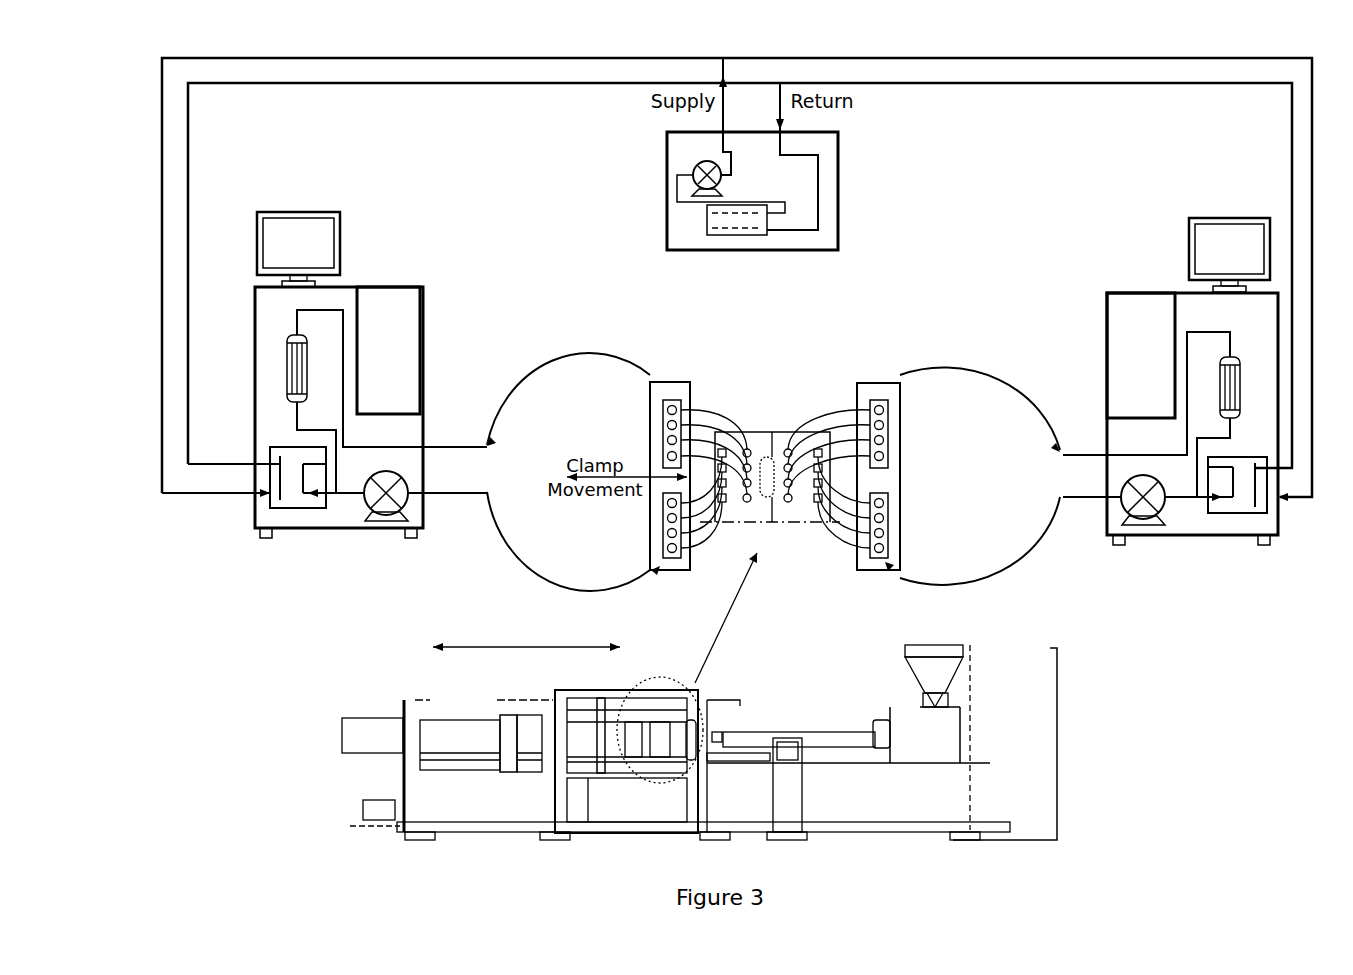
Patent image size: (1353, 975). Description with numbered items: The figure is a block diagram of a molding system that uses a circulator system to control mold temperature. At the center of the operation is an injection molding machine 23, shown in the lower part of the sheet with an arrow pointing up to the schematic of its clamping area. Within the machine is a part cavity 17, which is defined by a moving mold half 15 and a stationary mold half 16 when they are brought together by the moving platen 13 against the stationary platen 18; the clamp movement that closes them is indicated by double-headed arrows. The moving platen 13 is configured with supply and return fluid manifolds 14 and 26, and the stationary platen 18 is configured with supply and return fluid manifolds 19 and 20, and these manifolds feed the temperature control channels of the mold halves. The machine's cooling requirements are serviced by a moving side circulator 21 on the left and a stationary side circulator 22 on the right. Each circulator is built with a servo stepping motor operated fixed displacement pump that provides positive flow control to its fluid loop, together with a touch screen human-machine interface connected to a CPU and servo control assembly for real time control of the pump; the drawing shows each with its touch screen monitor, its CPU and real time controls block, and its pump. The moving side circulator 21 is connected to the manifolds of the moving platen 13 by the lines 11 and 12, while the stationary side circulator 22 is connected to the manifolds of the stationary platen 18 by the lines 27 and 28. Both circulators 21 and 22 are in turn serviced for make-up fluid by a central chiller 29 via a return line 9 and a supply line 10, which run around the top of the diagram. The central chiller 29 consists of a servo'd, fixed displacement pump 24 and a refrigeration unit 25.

The return line 9 is at (882, 83).
The supply line 10 is at (723, 58).
The supply line to first mold half 11 is at (462, 447).
The return line from first mold half 12 is at (463, 493).
The moving platen 13 is at (672, 382).
The fluid manifold 14 is at (683, 572).
The moving mold half 15 is at (757, 432).
The stationary mold half 16 is at (790, 432).
The part cavity 17 is at (757, 522).
The stationary platen 18 is at (887, 383).
The fluid manifold 19 is at (885, 570).
The fluid manifold 20 is at (888, 408).
The moving side circulator 21 is at (255, 312).
The stationary side circulator 22 is at (1107, 318).
The injection molding machine 23 is at (415, 700).
The fixed displacement pump 24 is at (706, 212).
The refrigeration unit 25 is at (697, 167).
The fluid manifold 26 is at (663, 412).
The return line from second mold half 27 is at (1078, 497).
The supply line to second mold half 28 is at (1082, 455).
The central chiller 29 is at (722, 216).